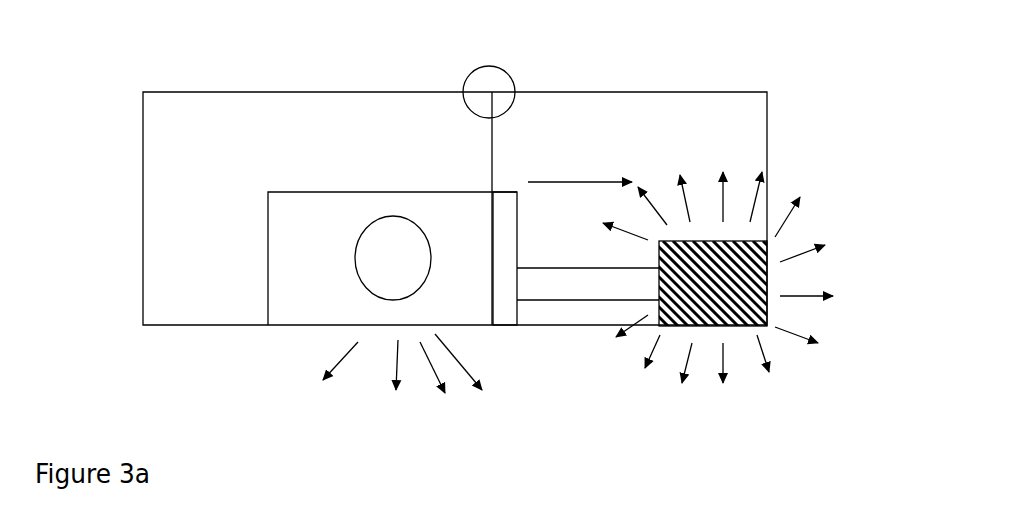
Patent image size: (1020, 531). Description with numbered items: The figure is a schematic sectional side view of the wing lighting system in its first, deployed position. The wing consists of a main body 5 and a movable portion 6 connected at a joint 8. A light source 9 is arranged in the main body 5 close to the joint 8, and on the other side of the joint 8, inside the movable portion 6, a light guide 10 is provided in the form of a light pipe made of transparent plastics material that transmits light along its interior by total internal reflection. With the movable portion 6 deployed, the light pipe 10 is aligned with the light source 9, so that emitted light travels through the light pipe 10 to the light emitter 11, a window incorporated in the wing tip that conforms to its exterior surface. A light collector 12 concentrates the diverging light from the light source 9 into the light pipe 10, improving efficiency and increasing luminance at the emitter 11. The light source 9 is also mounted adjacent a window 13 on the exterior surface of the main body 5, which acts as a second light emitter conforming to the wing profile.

The main body 5 is at (313, 91).
The movable portion 6 is at (707, 91).
The joint 8 is at (492, 92).
The light source 9 is at (345, 241).
The light guide 10 is at (590, 285).
The light emitter 11 is at (760, 288).
The light collector 12 is at (507, 320).
The window 13 is at (395, 325).